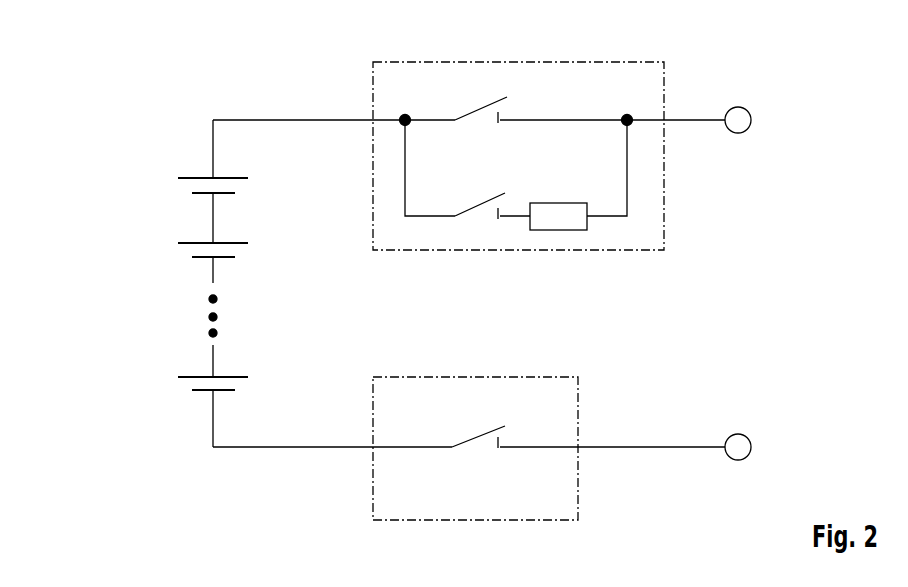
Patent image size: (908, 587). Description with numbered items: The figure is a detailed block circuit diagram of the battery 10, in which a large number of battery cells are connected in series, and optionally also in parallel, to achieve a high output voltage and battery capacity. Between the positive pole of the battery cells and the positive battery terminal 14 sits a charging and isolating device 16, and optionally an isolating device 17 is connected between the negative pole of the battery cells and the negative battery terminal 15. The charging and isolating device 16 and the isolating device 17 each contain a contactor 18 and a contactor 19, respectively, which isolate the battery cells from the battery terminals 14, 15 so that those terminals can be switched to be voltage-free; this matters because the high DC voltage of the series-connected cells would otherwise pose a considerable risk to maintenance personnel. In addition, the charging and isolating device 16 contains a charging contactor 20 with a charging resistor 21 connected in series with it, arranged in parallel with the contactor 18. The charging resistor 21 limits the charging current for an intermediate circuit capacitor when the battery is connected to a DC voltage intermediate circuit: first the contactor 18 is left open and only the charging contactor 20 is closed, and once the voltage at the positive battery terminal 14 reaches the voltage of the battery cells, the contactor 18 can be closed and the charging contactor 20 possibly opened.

The battery 10 is at (158, 140).
The positive battery terminal 14 is at (738, 106).
The negative battery terminal 15 is at (738, 433).
The charging and isolating device 16 is at (517, 61).
The isolating device 17 is at (477, 376).
The contactor 18 is at (482, 112).
The contactor 19 is at (477, 440).
The charging contactor 20 is at (480, 207).
The charging resistor 21 is at (558, 230).